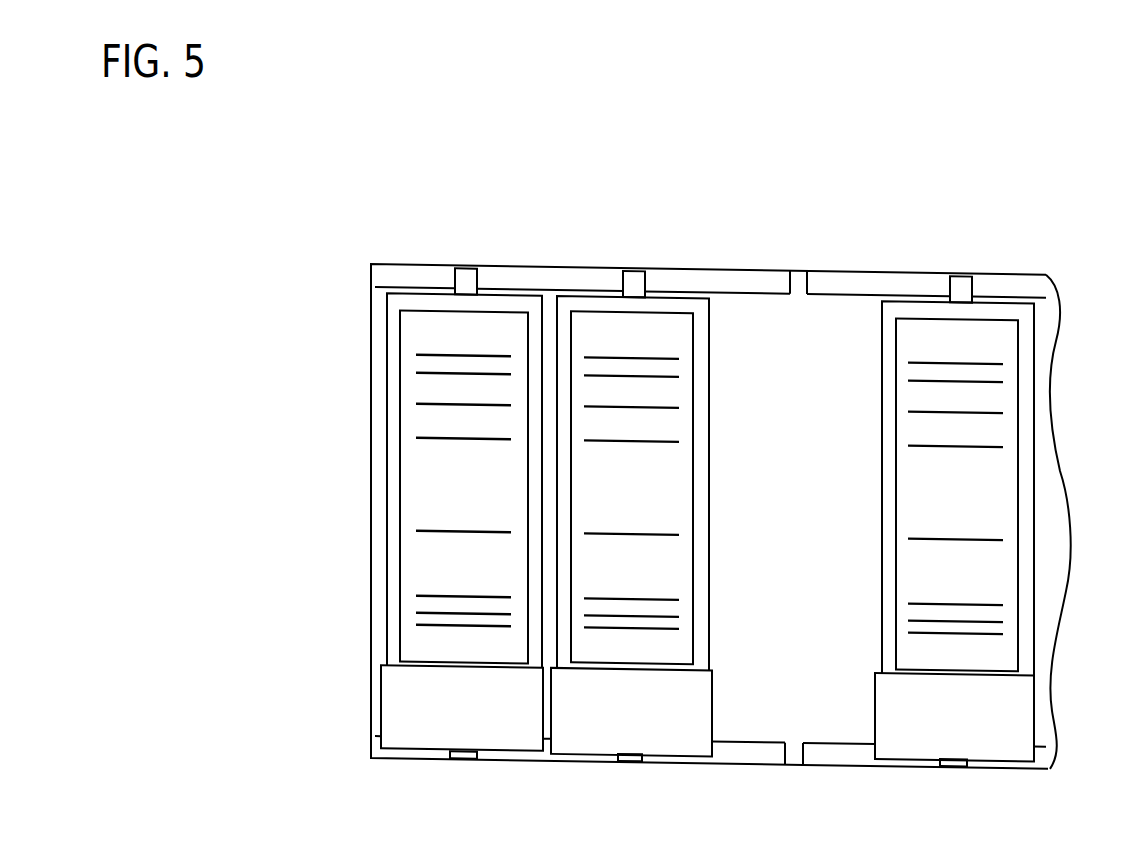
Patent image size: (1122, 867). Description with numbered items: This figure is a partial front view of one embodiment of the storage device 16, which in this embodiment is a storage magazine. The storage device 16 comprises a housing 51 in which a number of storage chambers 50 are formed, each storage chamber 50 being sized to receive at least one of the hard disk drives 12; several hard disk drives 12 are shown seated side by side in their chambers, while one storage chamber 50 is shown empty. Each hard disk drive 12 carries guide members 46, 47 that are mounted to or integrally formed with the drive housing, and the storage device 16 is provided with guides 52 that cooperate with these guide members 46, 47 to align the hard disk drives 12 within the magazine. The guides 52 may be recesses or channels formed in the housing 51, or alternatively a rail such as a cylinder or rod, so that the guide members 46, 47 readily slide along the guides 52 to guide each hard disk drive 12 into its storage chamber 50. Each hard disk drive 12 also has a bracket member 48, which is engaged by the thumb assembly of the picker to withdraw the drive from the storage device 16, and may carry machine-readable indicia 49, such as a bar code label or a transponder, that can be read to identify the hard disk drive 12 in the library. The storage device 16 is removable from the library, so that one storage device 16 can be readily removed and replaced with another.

The hard disk drive 12 is at (706, 660).
The storage device 16 is at (985, 247).
The guide member 46 is at (634, 266).
The guide member 47 is at (633, 765).
The bracket member 48 is at (545, 752).
The machine-readable indicia 49 is at (708, 620).
The storage chamber 50 is at (809, 356).
The housing 51 is at (822, 770).
The guide 52 is at (801, 767).